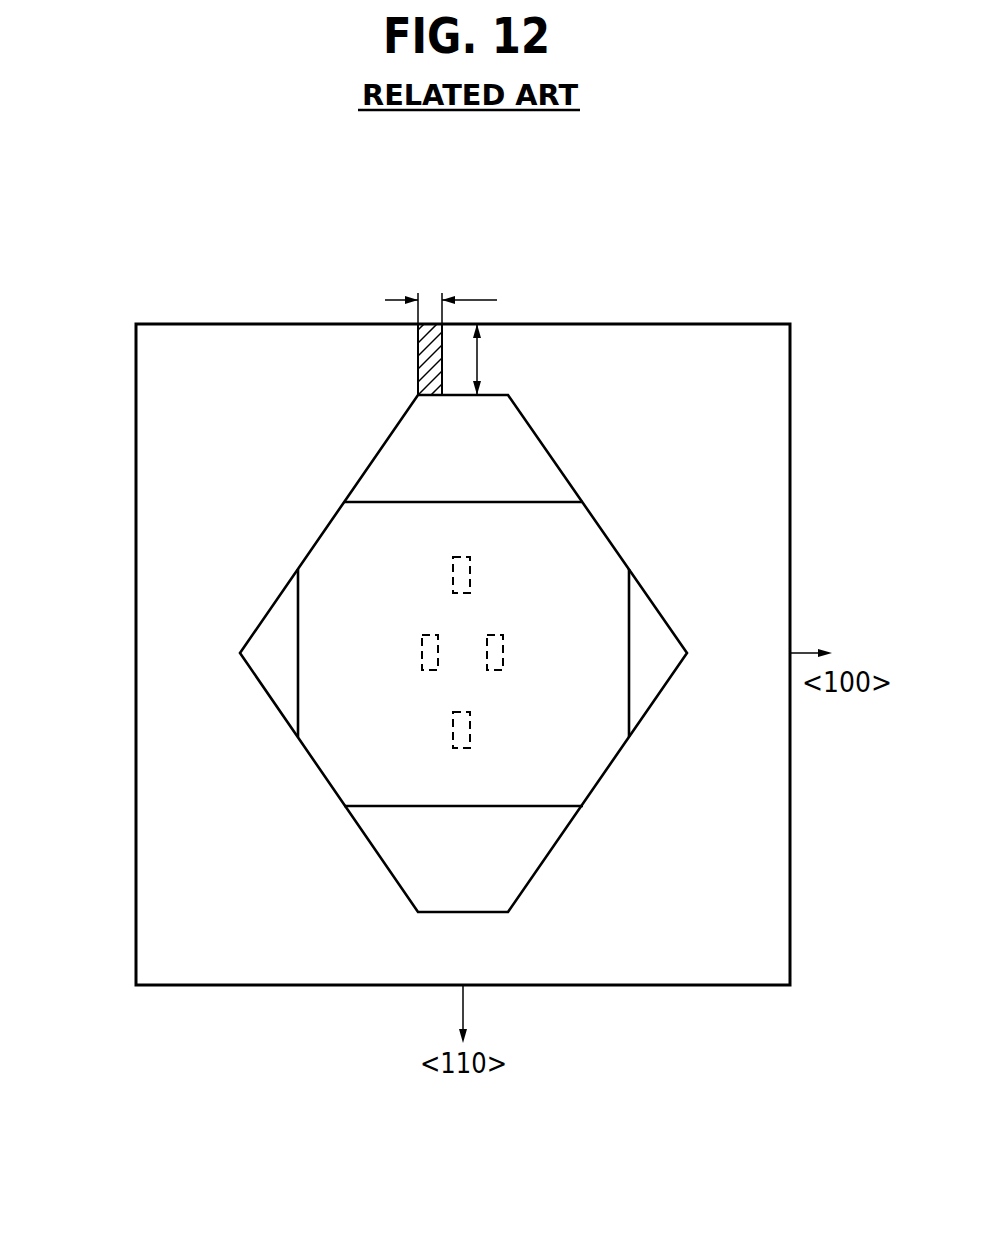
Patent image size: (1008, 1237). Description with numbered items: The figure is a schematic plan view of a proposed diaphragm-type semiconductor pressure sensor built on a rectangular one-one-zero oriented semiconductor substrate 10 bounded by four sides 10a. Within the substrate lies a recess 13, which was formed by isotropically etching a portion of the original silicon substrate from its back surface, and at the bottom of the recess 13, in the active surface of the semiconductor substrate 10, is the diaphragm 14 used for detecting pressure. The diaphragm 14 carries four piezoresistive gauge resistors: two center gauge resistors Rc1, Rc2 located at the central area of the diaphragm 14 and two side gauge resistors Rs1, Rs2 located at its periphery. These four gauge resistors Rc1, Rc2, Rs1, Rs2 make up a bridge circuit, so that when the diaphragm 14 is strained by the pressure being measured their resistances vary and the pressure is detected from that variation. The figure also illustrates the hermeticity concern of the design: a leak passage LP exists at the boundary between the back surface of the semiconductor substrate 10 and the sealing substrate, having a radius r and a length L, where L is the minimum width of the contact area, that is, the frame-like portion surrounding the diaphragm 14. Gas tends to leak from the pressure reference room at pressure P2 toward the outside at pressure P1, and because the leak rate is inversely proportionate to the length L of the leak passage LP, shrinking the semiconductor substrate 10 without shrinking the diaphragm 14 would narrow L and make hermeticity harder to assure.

The (110) semiconductor substrate 10 is at (464, 656).
The sides 10a is at (287, 324).
The recess 13 is at (563, 472).
The diaphragm 14 is at (487, 526).
The leak passage LP is at (418, 362).
The pressure outside the pressure reference room P1 is at (463, 383).
The pressure in the pressure reference room P2 is at (472, 708).
The length of the leak passage L is at (487, 359).
The radius of the leak passage r is at (441, 297).
The side gauge resistor Rs1 is at (453, 748).
The side gauge resistor Rs2 is at (453, 566).
The center gauge resistor Rc1 is at (423, 670).
The center gauge resistor Rc2 is at (487, 669).